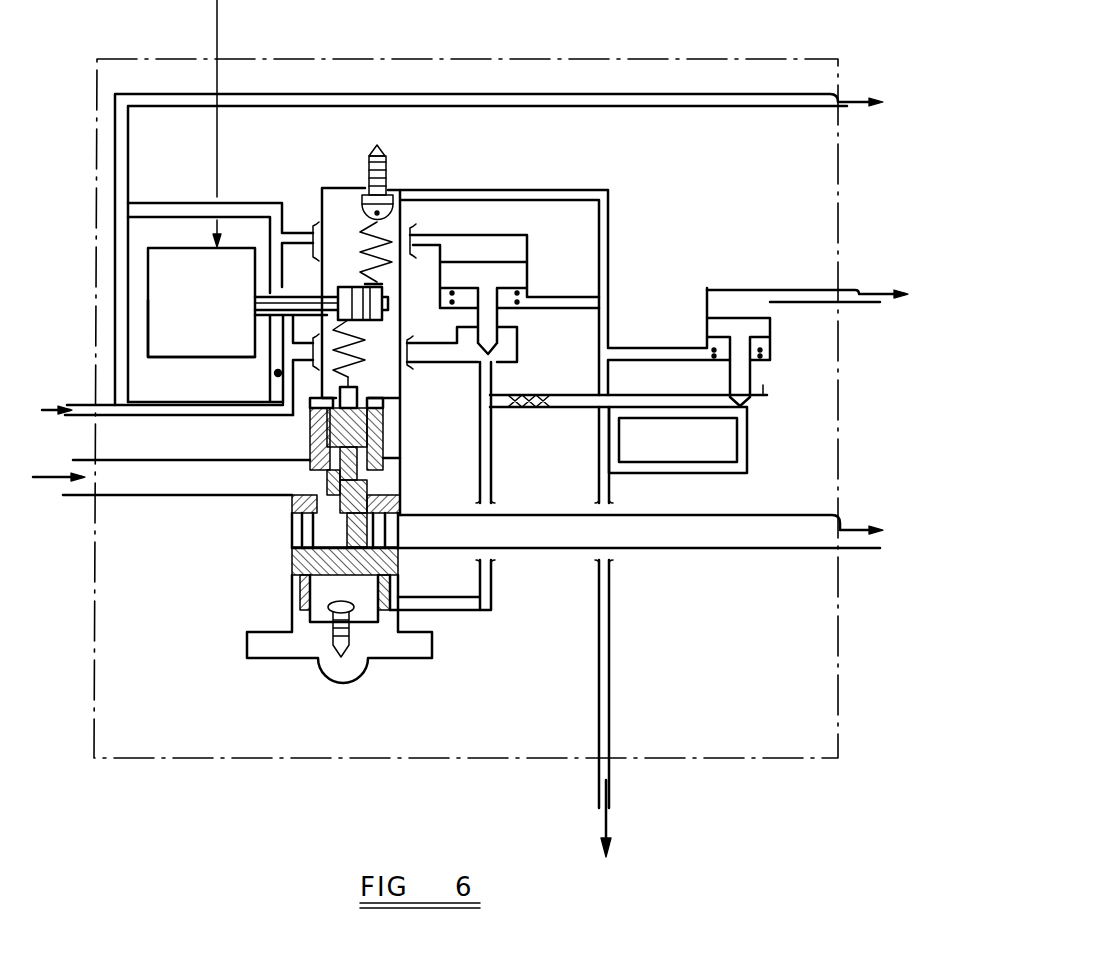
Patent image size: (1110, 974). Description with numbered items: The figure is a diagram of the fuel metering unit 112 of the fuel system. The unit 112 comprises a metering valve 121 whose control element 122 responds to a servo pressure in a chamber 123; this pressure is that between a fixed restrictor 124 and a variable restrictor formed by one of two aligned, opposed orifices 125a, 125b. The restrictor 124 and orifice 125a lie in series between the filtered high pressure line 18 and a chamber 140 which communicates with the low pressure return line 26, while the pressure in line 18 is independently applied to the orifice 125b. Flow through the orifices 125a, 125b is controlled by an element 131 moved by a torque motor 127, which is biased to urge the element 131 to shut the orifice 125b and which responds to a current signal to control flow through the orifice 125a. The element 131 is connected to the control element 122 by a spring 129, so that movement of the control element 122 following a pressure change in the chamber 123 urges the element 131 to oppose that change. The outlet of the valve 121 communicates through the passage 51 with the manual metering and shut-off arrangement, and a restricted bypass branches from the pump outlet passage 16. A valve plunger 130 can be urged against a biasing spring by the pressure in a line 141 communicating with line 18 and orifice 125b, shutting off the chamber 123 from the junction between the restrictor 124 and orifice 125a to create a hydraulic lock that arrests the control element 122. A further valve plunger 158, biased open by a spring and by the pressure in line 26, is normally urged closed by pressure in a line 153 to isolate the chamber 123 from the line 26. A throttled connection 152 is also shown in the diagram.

The pump outlet passage 16 is at (72, 487).
The filtered high pressure line 18 is at (830, 94).
The low pressure return line 26 is at (612, 780).
The passage 51 is at (842, 528).
The fuel metering unit 112 is at (218, 732).
The metering valve 121 is at (322, 514).
The control element 122 is at (353, 445).
The chamber 123 is at (365, 605).
The fixed restrictor 124 is at (276, 374).
The orifice 125a is at (273, 318).
The orifice 125b is at (273, 287).
The torque motor 127 is at (188, 248).
The spring 129 is at (360, 367).
The valve plunger 130 is at (515, 278).
The element 131 is at (257, 300).
The chamber 140 is at (335, 208).
The line 141 is at (415, 240).
The throttle / filter line 152 is at (530, 408).
The line 153 is at (855, 290).
The valve plunger 158 is at (758, 328).